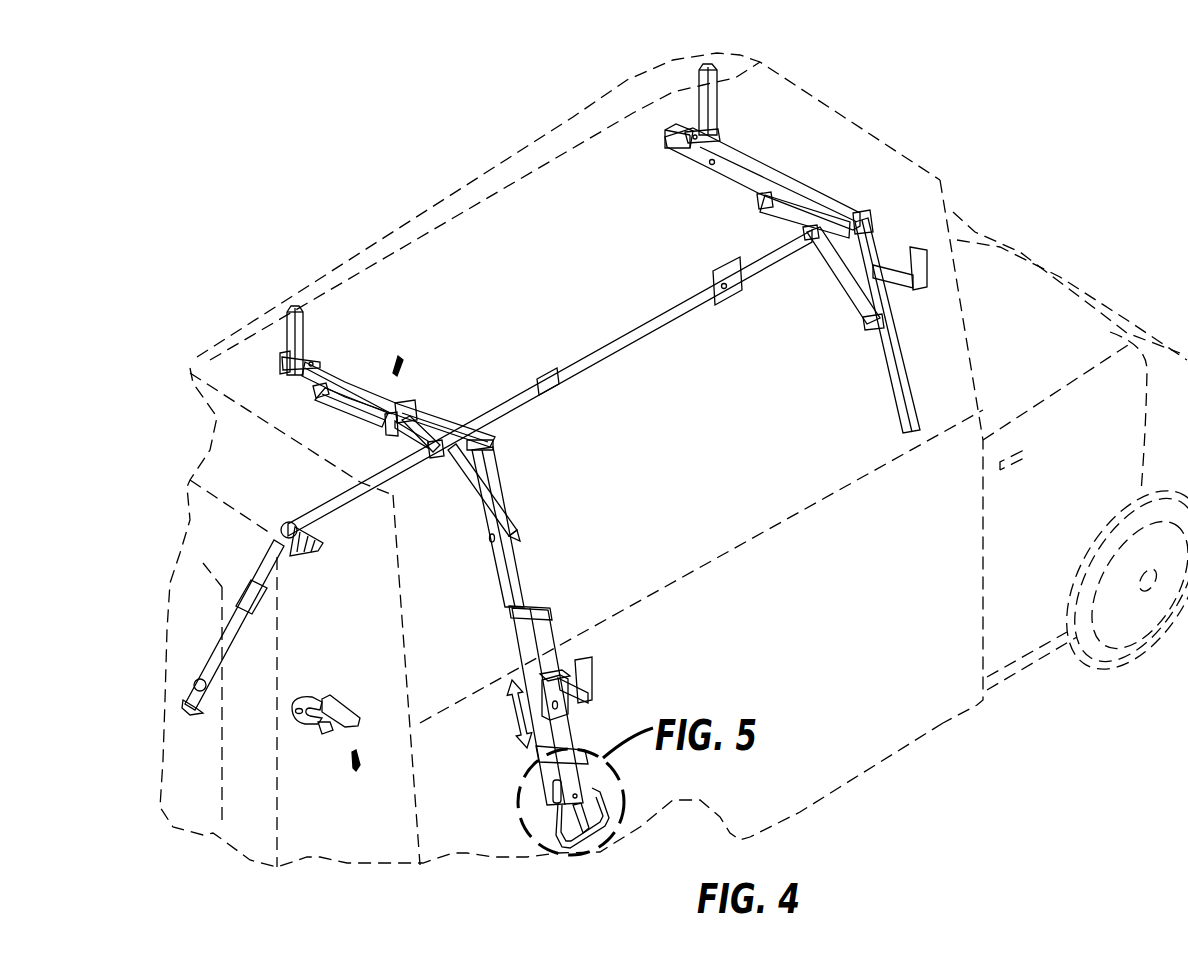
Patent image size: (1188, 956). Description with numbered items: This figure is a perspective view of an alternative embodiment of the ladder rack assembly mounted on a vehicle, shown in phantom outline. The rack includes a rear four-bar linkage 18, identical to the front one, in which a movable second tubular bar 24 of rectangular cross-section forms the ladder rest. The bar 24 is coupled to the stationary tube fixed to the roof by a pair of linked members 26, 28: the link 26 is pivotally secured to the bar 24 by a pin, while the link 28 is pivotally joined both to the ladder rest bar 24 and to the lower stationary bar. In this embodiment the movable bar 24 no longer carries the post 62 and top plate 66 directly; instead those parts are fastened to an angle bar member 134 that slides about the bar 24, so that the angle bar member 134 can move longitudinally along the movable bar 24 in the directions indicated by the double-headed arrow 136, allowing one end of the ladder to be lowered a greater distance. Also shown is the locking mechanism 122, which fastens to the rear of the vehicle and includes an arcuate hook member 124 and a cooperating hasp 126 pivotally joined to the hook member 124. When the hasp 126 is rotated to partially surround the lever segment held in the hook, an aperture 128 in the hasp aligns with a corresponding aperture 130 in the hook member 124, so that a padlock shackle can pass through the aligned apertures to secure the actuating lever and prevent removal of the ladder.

The rear 4-bar linkage 18 is at (402, 358).
The second tubular bar 24 is at (508, 553).
The link 26 is at (472, 478).
The link 28 is at (438, 417).
The post 62 is at (567, 677).
The top plate 66 is at (587, 672).
The locking mechanism 122 is at (357, 770).
The arcuate hook member 124 is at (337, 707).
The hasp 126 is at (313, 702).
The aperture in the hasp 128 is at (295, 705).
The aperture in the hook member 130 is at (325, 733).
The angle bar member 134 is at (542, 745).
The double-headed arrow 136 is at (510, 723).